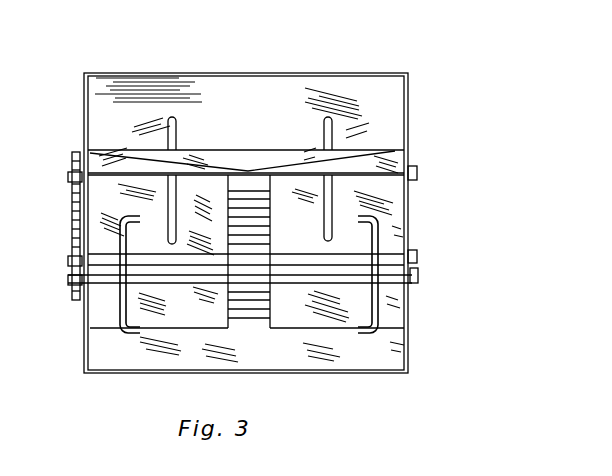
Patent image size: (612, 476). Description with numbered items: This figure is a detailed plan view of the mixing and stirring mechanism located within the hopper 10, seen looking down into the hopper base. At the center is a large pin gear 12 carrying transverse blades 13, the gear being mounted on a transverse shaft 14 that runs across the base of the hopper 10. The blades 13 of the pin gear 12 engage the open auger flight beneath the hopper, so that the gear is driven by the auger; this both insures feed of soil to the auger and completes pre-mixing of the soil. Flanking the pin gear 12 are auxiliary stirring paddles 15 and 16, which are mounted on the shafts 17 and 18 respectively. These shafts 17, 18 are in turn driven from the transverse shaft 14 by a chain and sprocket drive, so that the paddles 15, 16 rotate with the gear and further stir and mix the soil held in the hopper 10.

The hopper 10 is at (73, 212).
The pin gear 12 is at (228, 310).
The transverse blades 13 is at (272, 293).
The transverse shaft 14 is at (392, 255).
The auxiliary stirring paddle 15 is at (374, 230).
The auxiliary stirring paddle 16 is at (322, 121).
The shaft 17 is at (405, 290).
The shaft 18 is at (393, 175).